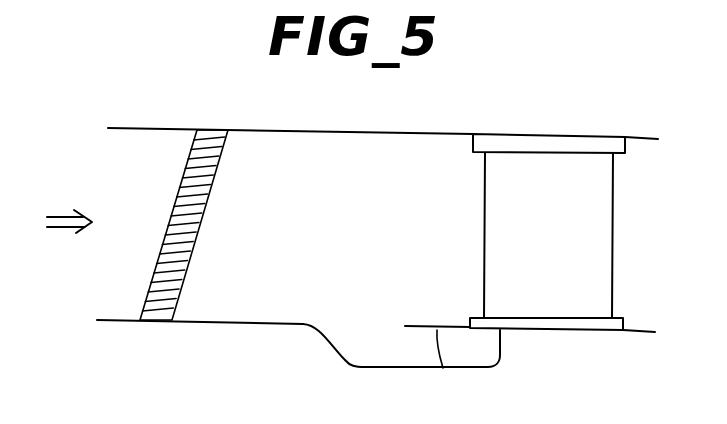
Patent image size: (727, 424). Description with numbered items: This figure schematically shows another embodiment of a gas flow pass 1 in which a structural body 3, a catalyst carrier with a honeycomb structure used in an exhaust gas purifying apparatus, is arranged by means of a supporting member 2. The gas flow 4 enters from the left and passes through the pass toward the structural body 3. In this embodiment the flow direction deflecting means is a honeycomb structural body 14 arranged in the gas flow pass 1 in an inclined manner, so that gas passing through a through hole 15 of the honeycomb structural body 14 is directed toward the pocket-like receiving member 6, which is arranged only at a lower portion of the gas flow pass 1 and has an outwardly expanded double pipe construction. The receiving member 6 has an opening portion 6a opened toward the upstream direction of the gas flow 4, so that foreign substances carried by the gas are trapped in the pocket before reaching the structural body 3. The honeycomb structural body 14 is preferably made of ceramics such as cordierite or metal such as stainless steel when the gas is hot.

The gas flow pass 1 is at (452, 82).
The supporting member 2 is at (597, 150).
The structural body 3 is at (606, 238).
The gas flow 4 is at (62, 230).
The pocket-like receiving member 6 is at (443, 368).
The opening portion 6a is at (405, 348).
The honeycomb structural body 14 is at (163, 297).
The through hole 15 is at (195, 170).